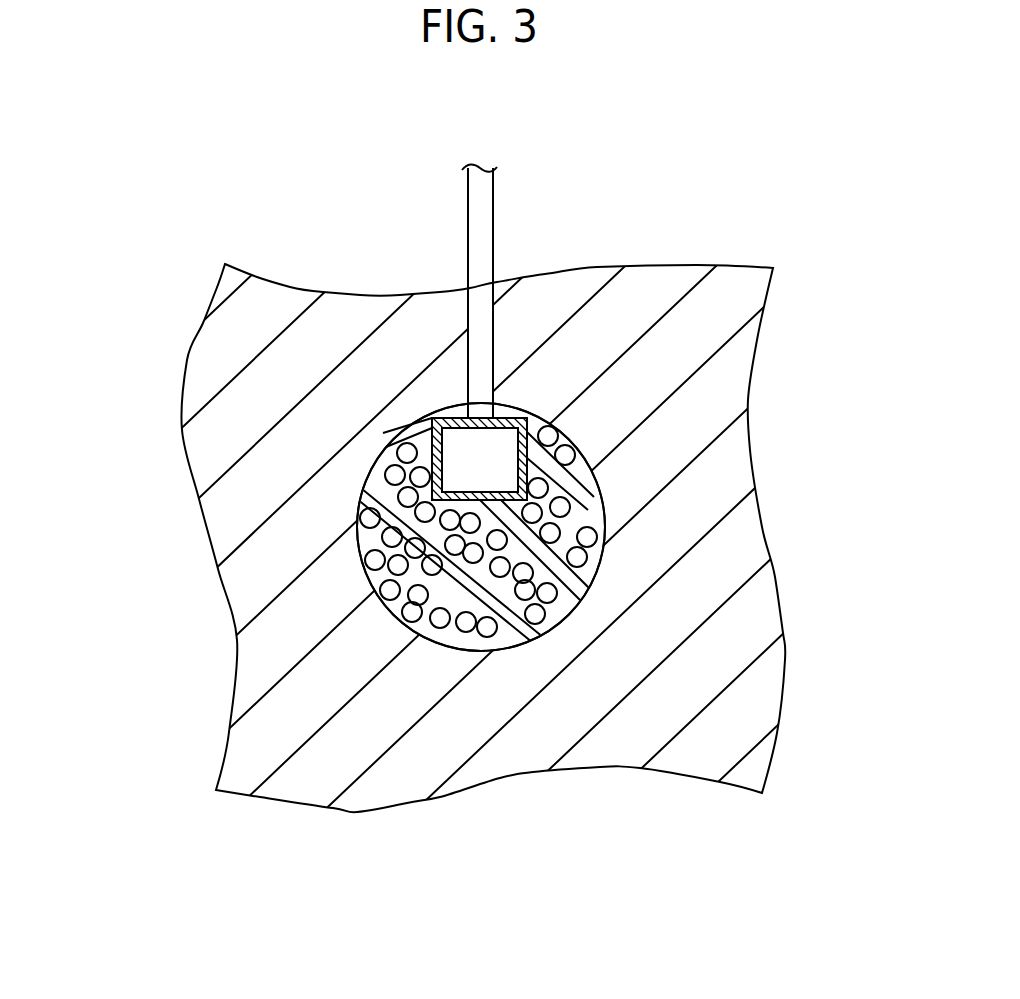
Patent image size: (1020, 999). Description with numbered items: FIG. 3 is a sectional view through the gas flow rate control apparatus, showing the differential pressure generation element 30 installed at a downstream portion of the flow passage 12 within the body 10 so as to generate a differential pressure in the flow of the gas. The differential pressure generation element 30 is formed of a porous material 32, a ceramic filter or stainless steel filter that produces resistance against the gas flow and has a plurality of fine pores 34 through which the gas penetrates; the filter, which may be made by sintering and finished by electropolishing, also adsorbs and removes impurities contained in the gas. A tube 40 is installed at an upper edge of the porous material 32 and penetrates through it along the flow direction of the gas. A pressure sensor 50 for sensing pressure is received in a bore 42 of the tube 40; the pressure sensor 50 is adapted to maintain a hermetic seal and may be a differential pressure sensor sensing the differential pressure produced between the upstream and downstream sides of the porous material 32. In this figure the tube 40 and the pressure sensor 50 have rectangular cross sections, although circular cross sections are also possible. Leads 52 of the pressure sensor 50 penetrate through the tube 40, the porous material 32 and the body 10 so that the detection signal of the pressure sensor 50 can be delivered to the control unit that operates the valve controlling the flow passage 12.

The body 10 is at (210, 368).
The flow passage 12 is at (601, 497).
The differential pressure generation element 30 is at (427, 640).
The porous material 32 is at (357, 500).
The fine pores 34 is at (500, 590).
The tube 40 is at (498, 416).
The bore 42 is at (515, 476).
The pressure sensor 50 is at (470, 445).
The leads 52 is at (481, 213).